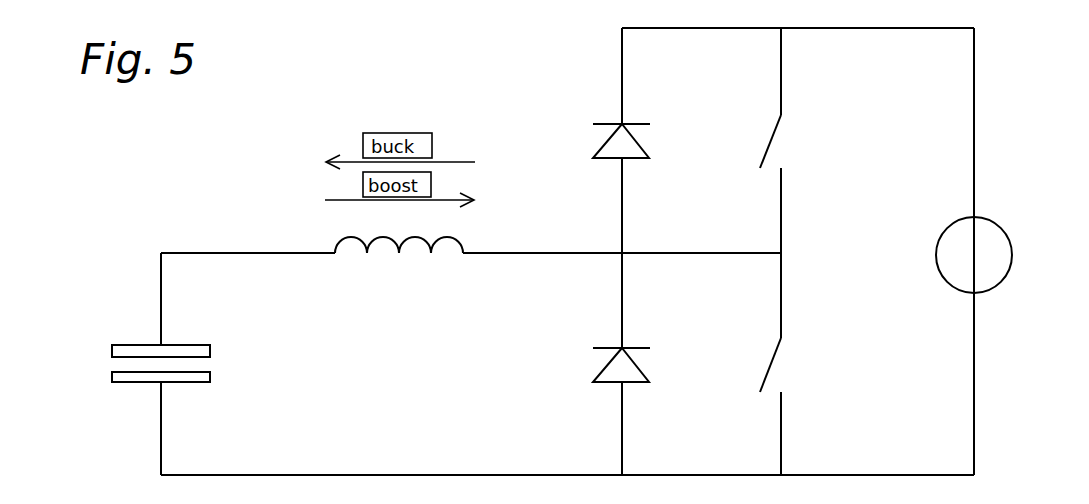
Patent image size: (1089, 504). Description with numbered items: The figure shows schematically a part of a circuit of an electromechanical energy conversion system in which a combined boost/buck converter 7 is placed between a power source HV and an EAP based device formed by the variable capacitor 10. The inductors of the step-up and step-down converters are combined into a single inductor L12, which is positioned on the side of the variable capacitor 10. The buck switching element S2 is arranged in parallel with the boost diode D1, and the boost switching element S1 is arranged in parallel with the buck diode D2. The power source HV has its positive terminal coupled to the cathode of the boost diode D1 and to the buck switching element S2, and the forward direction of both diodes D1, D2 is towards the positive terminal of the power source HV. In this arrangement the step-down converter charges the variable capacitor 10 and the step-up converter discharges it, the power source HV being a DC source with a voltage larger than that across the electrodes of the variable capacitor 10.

The bidirectional DC/DC converter 7 is at (540, 104).
The variable capacitor 10 is at (128, 350).
The inductor L12 is at (413, 250).
The boost diode D1 is at (632, 148).
The buck diode D2 is at (628, 368).
The boost switching element S1 is at (769, 370).
The buck switching element S2 is at (770, 143).
The power source HV is at (1000, 243).